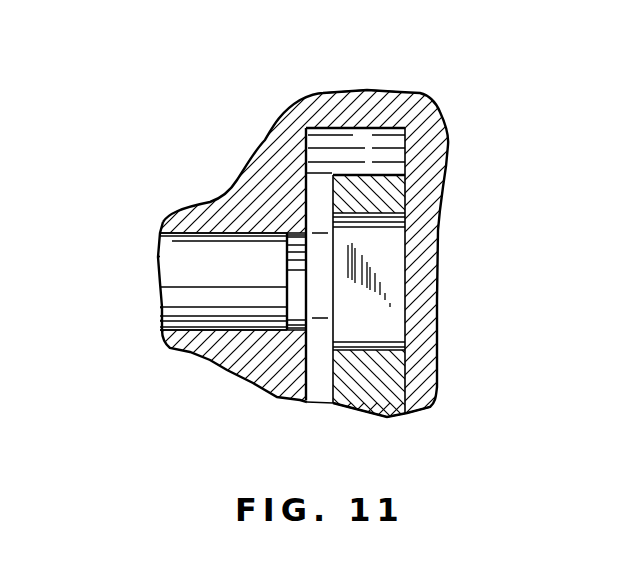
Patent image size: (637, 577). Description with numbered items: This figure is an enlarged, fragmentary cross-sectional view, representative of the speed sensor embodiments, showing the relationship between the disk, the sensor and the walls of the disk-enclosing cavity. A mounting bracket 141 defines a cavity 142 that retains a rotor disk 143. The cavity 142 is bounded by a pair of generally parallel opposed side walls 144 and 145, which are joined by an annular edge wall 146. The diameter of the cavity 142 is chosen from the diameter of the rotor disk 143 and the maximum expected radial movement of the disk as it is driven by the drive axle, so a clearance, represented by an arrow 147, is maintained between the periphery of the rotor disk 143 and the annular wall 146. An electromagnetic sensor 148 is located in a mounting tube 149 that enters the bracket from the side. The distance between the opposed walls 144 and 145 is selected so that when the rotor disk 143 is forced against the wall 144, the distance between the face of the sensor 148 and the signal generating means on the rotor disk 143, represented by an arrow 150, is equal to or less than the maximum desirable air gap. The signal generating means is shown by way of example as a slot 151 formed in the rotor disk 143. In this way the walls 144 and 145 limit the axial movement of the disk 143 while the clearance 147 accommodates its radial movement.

The mounting bracket 141 is at (433, 110).
The cavity 142 is at (331, 153).
The rotor disk 143 is at (383, 403).
The side wall 144 is at (406, 148).
The side wall 145 is at (306, 175).
The annular edge wall 146 is at (346, 127).
The clearance 147 is at (369, 174).
The electromagnetic sensor 148 is at (182, 278).
The mounting tube 149 is at (196, 327).
The air gap distance 150 is at (289, 280).
The slot 151 is at (395, 242).